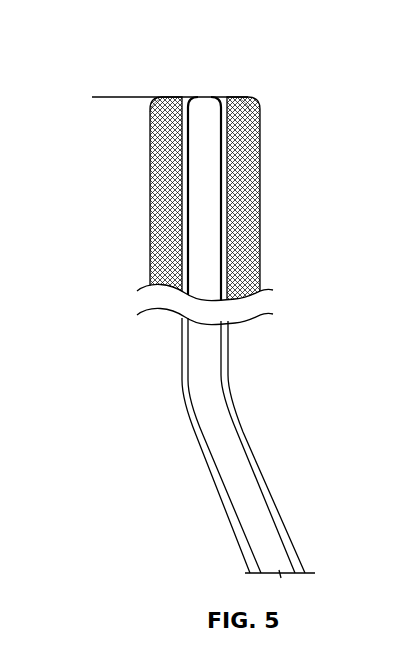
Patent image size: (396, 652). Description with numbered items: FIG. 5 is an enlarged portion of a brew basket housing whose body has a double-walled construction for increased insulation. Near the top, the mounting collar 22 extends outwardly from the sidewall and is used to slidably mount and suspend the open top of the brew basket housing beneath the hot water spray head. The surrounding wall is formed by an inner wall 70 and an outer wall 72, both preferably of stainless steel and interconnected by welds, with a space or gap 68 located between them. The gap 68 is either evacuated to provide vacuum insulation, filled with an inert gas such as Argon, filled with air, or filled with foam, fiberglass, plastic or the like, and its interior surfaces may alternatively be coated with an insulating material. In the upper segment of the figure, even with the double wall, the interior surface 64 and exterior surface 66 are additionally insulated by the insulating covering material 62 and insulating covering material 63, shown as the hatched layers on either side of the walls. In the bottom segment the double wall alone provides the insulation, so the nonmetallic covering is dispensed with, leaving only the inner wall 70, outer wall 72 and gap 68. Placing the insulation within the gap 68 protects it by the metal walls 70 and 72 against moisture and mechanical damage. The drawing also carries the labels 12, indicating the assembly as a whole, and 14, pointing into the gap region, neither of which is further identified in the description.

The infusion device 12 is at (81, 52).
The fluid flow direction 14 is at (258, 493).
The mounting collar 22 is at (110, 97).
The insulating covering material 62 is at (246, 146).
The insulating covering material 63 is at (153, 110).
The interior surface 64 is at (232, 248).
The exterior surface 66 is at (181, 152).
The gap 68 is at (207, 159).
The inner wall 70 is at (223, 204).
The outer wall 72 is at (200, 110).